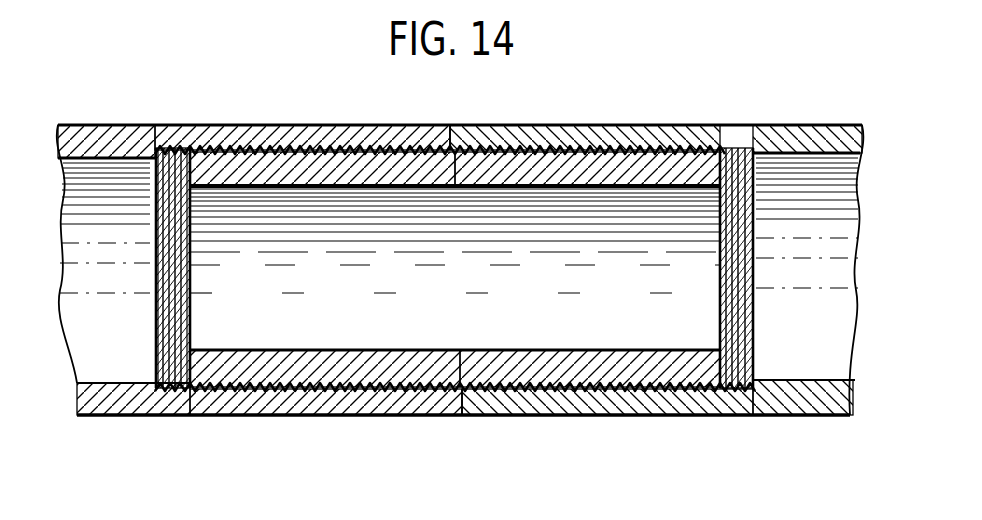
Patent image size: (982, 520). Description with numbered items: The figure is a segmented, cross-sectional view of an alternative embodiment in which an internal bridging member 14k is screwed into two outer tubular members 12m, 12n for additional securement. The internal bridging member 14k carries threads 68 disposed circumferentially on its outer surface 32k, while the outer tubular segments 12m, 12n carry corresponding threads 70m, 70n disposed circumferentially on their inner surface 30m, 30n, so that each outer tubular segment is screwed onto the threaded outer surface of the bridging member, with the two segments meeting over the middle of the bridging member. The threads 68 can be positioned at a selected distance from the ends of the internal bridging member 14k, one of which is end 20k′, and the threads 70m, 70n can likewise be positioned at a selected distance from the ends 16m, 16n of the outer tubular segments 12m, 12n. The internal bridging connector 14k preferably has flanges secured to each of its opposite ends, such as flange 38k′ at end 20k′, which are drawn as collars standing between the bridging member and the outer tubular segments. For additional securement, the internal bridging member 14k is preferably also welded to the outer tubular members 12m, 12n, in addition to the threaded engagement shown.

The outer tubular segment 12m is at (79, 140).
The outer tubular segment 12n is at (786, 140).
The internal bridging member 14k is at (174, 162).
The outer surface 32k is at (228, 220).
The inner surface 30m is at (318, 146).
The inner surface 30n is at (577, 146).
The threads 68 is at (386, 143).
The threads 70m is at (430, 144).
The threads 70n is at (650, 144).
The end 16m is at (432, 392).
The end 16n is at (484, 392).
The end 20k′ is at (215, 368).
The flange 38k′ is at (168, 310).